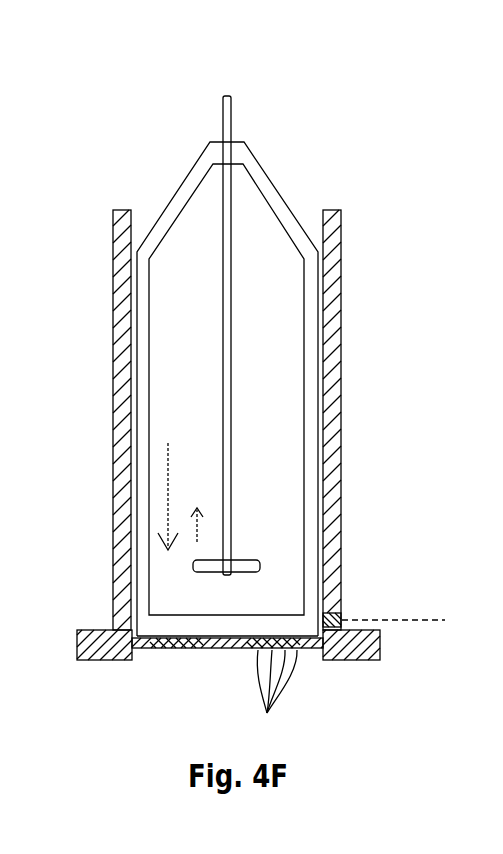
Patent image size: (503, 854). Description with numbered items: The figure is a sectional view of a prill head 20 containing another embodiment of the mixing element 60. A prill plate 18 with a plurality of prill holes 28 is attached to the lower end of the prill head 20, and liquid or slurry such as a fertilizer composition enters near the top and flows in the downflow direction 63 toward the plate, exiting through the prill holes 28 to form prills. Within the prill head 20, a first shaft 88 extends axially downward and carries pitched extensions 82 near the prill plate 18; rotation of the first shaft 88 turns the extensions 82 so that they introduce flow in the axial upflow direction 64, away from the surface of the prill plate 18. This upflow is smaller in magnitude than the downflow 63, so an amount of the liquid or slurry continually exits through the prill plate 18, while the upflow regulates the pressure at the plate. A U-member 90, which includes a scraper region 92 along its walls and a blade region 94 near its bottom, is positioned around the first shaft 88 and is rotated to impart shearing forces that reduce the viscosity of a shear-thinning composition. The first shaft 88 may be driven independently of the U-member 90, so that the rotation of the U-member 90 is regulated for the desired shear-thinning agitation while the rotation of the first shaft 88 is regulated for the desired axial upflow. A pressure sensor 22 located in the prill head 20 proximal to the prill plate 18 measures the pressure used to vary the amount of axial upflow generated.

The mixing element 60 is at (166, 112).
The first shaft 88 is at (231, 120).
The prill head 20 is at (348, 325).
The U-member 90 is at (140, 333).
The scraper region 92 is at (140, 423).
The downflow direction 63 is at (168, 505).
The axial upflow direction 64 is at (197, 525).
The extensions 82 is at (243, 560).
The pressure sensor 22 is at (343, 618).
The blade region 94 is at (155, 625).
The prill plate 18 is at (163, 650).
The prill holes 28 is at (277, 700).